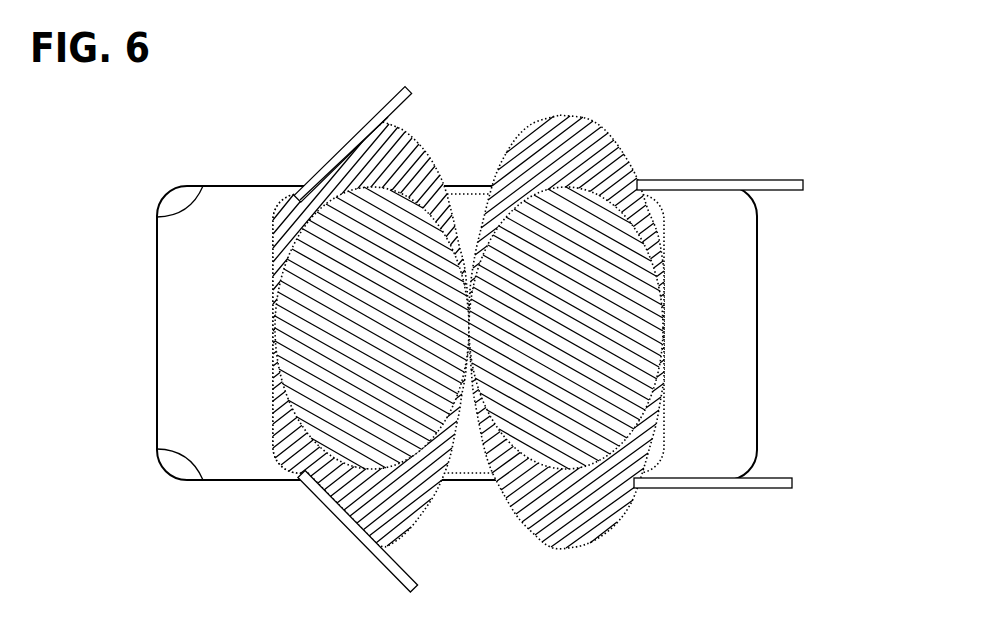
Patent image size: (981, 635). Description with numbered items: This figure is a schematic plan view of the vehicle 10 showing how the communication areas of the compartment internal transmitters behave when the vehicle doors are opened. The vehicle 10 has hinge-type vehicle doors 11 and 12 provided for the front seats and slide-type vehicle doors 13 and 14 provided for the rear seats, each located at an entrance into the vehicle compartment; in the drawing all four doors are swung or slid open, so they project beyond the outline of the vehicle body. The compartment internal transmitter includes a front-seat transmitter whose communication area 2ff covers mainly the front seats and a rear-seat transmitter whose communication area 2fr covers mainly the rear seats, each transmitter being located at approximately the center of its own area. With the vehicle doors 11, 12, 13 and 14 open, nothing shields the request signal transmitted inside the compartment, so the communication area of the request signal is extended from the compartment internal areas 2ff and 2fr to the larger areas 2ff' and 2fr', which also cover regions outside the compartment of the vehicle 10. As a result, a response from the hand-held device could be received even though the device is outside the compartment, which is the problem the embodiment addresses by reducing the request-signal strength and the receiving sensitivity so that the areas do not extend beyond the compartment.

The vehicle 10 is at (260, 186).
The vehicle door 11 is at (385, 107).
The vehicle door 12 is at (383, 567).
The vehicle door 13 is at (733, 181).
The vehicle door 14 is at (703, 490).
The communication area 2ff is at (379, 310).
The extended communication area 2ff' is at (391, 372).
The communication area 2fr is at (566, 311).
The extended communication area 2fr' is at (566, 369).